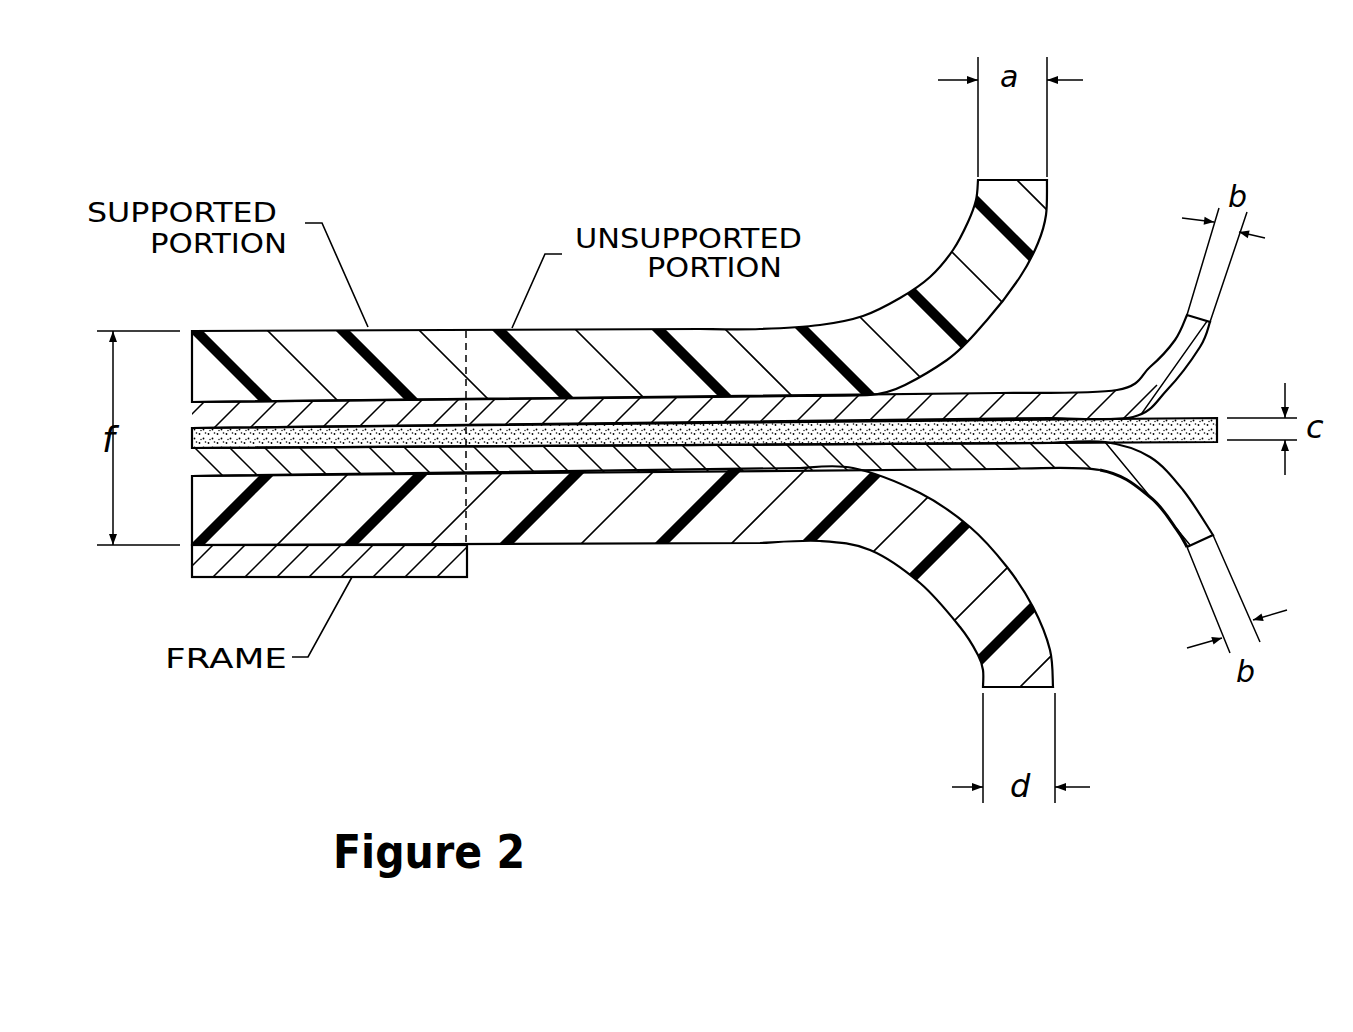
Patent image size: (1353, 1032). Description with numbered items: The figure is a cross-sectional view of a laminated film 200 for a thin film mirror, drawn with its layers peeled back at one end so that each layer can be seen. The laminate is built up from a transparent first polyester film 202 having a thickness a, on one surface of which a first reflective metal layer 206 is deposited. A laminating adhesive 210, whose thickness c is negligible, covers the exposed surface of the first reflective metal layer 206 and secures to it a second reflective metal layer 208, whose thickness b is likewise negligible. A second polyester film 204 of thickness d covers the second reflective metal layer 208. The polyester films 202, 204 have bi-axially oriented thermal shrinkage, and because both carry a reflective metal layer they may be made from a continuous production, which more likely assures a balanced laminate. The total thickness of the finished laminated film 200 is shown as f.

The laminated film 200 is at (708, 122).
The first polyester film 202 is at (487, 333).
The second polyester film 204 is at (500, 517).
The first reflective metal layer 206 is at (1167, 356).
The second reflective metal layer 208 is at (1177, 527).
The laminating adhesive 210 is at (1063, 428).